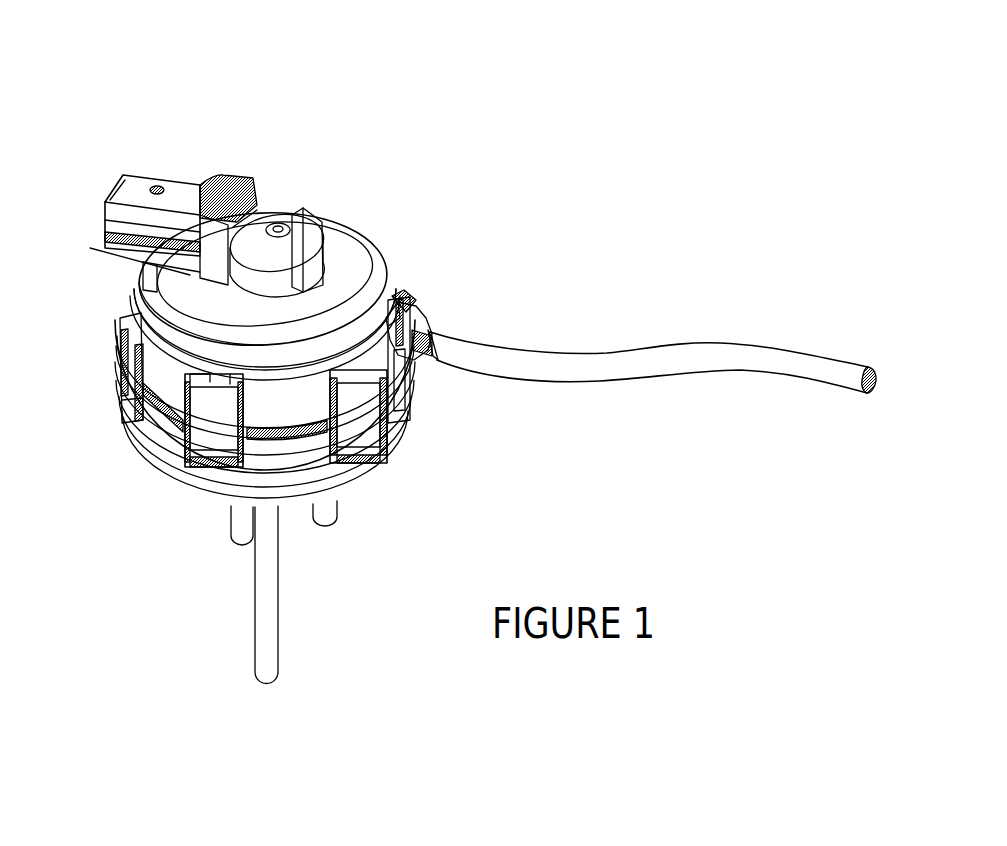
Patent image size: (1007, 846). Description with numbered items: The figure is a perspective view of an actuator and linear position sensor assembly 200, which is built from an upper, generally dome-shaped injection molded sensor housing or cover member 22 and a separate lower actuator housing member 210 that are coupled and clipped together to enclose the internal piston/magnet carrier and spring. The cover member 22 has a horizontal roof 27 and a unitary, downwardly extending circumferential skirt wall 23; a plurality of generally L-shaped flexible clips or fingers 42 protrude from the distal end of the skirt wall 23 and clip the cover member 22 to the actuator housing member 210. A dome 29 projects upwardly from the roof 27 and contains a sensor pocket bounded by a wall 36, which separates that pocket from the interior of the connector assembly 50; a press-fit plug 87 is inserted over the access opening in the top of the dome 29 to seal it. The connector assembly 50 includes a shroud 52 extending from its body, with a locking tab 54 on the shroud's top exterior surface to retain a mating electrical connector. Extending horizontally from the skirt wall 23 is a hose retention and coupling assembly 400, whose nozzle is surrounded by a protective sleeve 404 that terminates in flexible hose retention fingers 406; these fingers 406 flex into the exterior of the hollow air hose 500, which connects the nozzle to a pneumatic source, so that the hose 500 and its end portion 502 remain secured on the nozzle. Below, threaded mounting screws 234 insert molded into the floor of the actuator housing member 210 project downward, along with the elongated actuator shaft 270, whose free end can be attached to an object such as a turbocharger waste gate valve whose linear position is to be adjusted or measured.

The actuator and sensor assembly 200 is at (436, 122).
The actuator housing member 210 is at (182, 492).
The sensor housing or cover member 22 is at (374, 243).
The skirt wall 23 is at (137, 313).
The roof 27 is at (330, 240).
The dome 29 is at (274, 222).
The connector assembly 50 is at (184, 168).
The shroud 52 is at (133, 183).
The locking tab 54 is at (157, 185).
The plug 87 is at (236, 175).
The wall 36 is at (143, 262).
The clips or fingers 42 is at (118, 357).
The mounting screws or bolts 234 is at (224, 543).
The rod or actuator shaft 270 is at (284, 632).
The hose retention and coupling assembly 400 is at (427, 311).
The sleeve or shroud or collar 404 is at (412, 304).
The hose retention fingers or tabs 406 is at (434, 328).
The air hose 500 is at (606, 350).
The tube end 502 is at (436, 345).